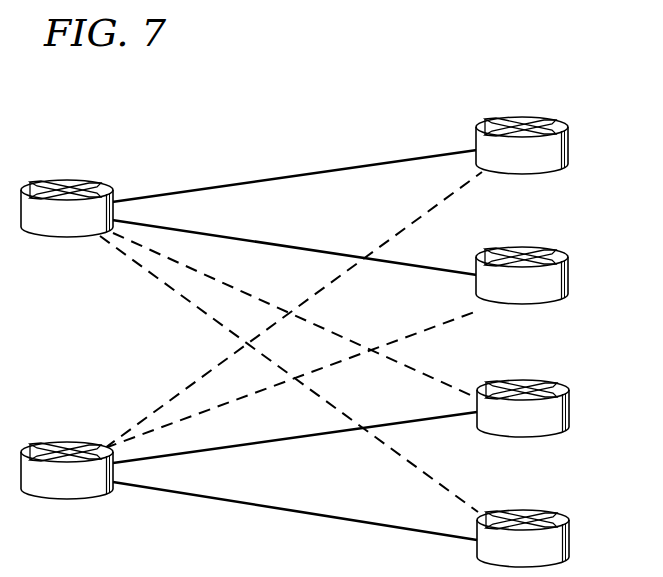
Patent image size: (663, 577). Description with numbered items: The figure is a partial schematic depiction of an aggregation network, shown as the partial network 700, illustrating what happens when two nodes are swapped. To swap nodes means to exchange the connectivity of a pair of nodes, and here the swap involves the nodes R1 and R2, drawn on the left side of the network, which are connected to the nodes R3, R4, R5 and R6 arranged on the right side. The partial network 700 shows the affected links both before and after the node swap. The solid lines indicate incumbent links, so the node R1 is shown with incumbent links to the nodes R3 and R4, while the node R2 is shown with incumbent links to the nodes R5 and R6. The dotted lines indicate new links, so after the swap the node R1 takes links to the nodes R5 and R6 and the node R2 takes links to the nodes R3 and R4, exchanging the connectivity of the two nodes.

The partial network 700 is at (266, 131).
The node R1 is at (67, 208).
The node R2 is at (67, 470).
The node R3 is at (522, 145).
The node R4 is at (522, 275).
The node R5 is at (523, 408).
The node R6 is at (523, 538).